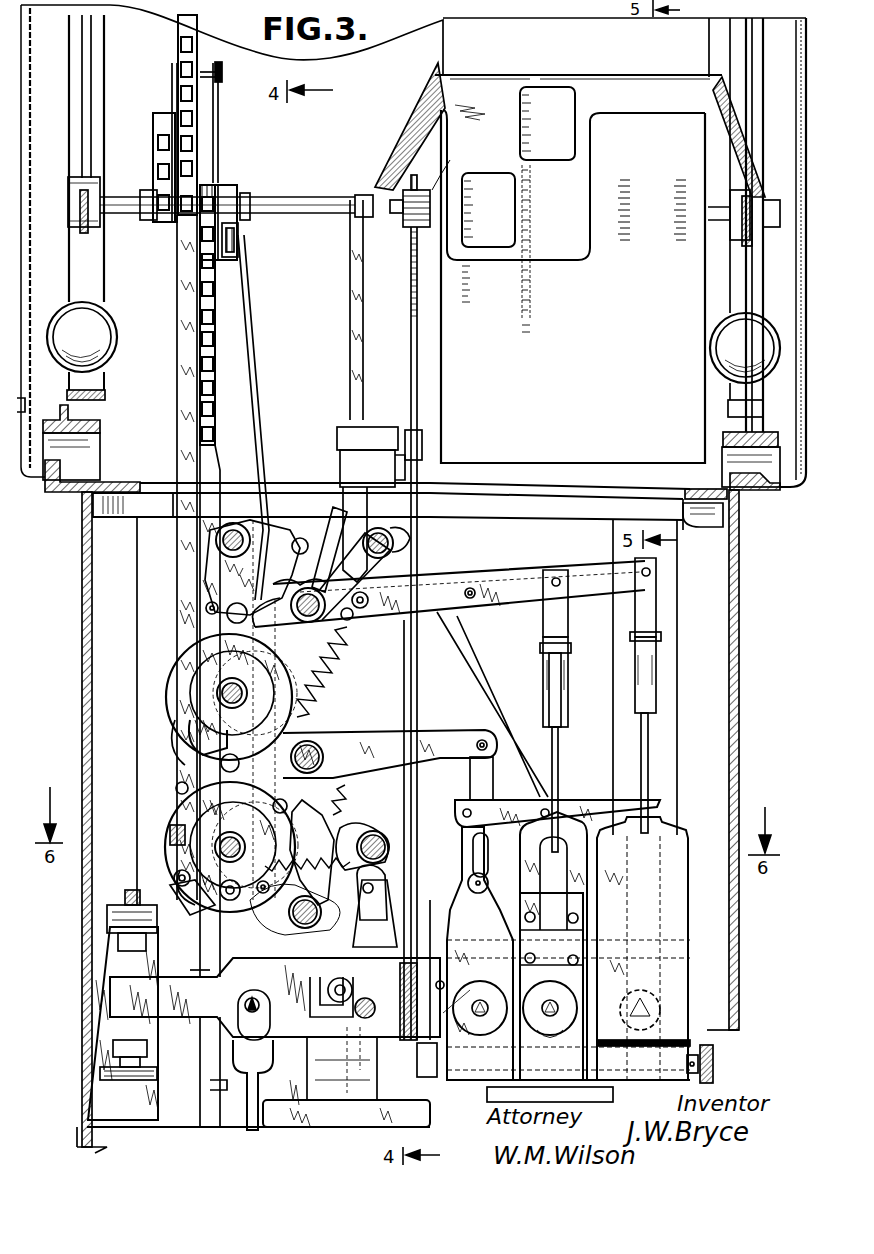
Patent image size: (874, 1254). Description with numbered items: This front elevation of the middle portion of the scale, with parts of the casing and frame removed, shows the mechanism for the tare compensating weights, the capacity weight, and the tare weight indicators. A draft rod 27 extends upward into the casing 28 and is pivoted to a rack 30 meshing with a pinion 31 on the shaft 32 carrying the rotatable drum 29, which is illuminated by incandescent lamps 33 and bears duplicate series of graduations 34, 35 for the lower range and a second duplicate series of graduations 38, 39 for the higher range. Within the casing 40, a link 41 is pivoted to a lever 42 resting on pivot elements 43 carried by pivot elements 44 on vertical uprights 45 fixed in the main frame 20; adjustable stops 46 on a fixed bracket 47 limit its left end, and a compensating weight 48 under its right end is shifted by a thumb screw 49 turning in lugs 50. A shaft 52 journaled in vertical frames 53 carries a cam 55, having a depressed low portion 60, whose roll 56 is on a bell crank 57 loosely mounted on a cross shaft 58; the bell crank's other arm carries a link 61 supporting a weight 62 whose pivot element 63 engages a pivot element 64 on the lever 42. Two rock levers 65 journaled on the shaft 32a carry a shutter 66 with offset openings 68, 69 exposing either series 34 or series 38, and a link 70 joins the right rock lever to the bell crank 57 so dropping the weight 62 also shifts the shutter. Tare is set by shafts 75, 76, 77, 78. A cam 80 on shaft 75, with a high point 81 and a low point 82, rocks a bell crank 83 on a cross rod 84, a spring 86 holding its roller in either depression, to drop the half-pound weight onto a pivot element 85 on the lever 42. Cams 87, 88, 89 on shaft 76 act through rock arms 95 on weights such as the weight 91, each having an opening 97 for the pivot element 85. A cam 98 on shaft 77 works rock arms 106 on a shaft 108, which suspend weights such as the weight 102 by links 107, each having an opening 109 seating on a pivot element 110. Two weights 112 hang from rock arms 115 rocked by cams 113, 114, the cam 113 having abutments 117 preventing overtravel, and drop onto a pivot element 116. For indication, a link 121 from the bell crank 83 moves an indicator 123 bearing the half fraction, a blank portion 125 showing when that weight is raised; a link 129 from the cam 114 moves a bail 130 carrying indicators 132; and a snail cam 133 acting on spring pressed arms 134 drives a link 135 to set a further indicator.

The main frame 20 is at (174, 1140).
The draft rod 27 is at (411, 671).
The casing 28 is at (31, 270).
The rotatable drum 29 is at (521, 463).
The rack 30 is at (422, 336).
The pinion 31 is at (432, 190).
The shaft 32 is at (417, 213).
The shaft 32a is at (305, 197).
The incandescent lamps 33 is at (110, 358).
The series of graduations 34 is at (484, 295).
The series of graduations 35 is at (680, 242).
The series of graduations 38 is at (528, 300).
The series of graduations 39 is at (623, 242).
The casing 40 is at (730, 638).
The link 41 is at (247, 1110).
The lever 42 is at (430, 970).
The pivot elements 43 is at (333, 983).
The pivot elements 44 is at (337, 1010).
The vertical uprights 45 is at (322, 1077).
The adjustable stops 46 is at (150, 950).
The fixed bracket 47 is at (113, 961).
The compensating weight 48 is at (497, 1090).
The thumb screw 49 is at (705, 1045).
The lugs 50 is at (436, 1078).
The shaft 52 is at (395, 612).
The vertical frames 53 is at (460, 681).
The cam 55 is at (350, 505).
The roll 56 is at (333, 507).
The bell crank 57 is at (590, 582).
The cross shaft 58 is at (311, 590).
The low portion 60 is at (398, 546).
The link 61 is at (646, 782).
The weight 62 is at (683, 893).
The pivot element 63 is at (587, 946).
The pivot element 64 is at (630, 1010).
The rock levers 65 is at (408, 142).
The shutter 66 is at (655, 105).
The opening 68 is at (497, 178).
The opening 69 is at (574, 93).
The link 70 is at (362, 378).
The shaft 75 is at (382, 840).
The shaft 76 is at (215, 848).
The shaft 77 is at (218, 694).
The shaft 78 is at (225, 542).
The cam 80 is at (362, 830).
The high point 81 is at (305, 812).
The low point 82 is at (378, 889).
The bell crank 83 is at (321, 908).
The cross rod 84 is at (312, 977).
The pivot element 85 is at (364, 1020).
The spring 86 is at (307, 851).
The cam 87 is at (210, 821).
The cam 88 is at (170, 834).
The cam 89 is at (178, 788).
The weight 91 is at (375, 913).
The rock arm 95 is at (232, 903).
The opening 97 is at (377, 1017).
The cam 98 is at (215, 672).
The weight 102 is at (470, 895).
The rock arms 106 is at (398, 742).
The links 107 is at (480, 783).
The shaft 108 is at (316, 750).
The opening 109 is at (446, 1012).
The pivot element 110 is at (472, 1000).
The weights 112 is at (563, 828).
The cam 113 is at (206, 608).
The cam 114 is at (233, 584).
The rock arms 115 is at (470, 600).
The pivot element 116 is at (545, 990).
The abutments 117 is at (296, 548).
The link 121 is at (252, 312).
The indicator 123 is at (240, 243).
The blank portion 125 is at (228, 190).
The link 129 is at (214, 466).
The bail 130 is at (205, 72).
The indicators 132 is at (160, 122).
The snail cam 133 is at (180, 703).
The spring pressed arms 134 is at (188, 746).
The link 135 is at (178, 765).